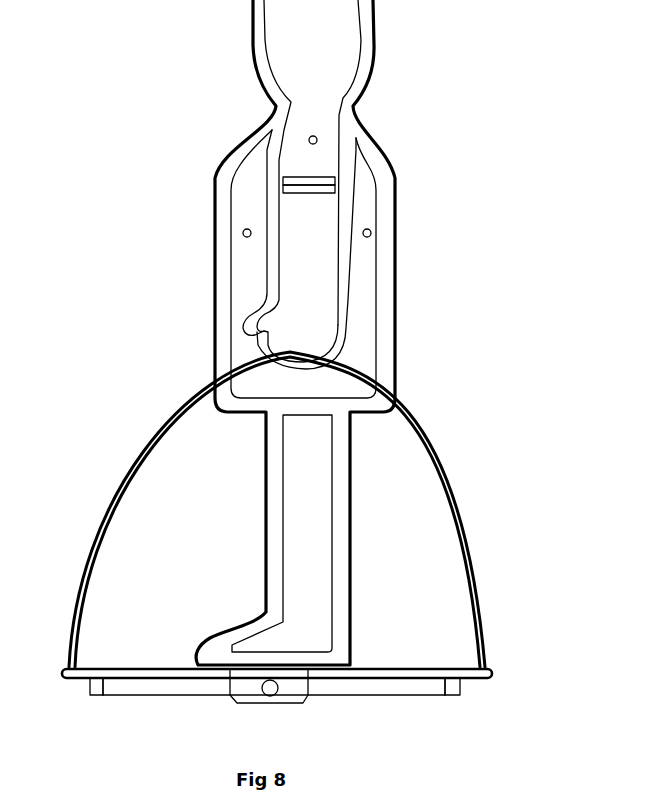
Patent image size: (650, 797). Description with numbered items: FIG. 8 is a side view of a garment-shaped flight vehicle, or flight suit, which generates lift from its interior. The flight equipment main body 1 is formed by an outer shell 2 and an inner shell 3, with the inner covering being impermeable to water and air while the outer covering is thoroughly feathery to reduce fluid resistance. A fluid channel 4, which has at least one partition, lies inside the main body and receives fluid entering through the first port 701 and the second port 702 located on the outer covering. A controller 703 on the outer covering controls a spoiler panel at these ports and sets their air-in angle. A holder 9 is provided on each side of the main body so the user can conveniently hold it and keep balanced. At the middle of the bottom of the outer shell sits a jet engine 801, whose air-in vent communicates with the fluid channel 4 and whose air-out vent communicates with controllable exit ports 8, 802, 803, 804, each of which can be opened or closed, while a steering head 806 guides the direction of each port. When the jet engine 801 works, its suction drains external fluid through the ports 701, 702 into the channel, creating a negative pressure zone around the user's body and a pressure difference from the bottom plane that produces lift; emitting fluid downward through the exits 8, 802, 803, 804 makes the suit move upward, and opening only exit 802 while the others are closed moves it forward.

The flight equipment main body 1 is at (240, 148).
The outer shell 2 is at (211, 288).
The inner shell 3 is at (228, 293).
The fluid channel 4 is at (219, 322).
The port 8 is at (262, 704).
The holder 9 is at (461, 535).
The first port 701 is at (312, 185).
The second port 702 is at (316, 137).
The controller 703 is at (290, 177).
The jet engine 801 is at (229, 677).
The port 802 is at (517, 703).
The port 803 is at (278, 693).
The port 804 is at (92, 685).
The steering head 806 is at (103, 695).